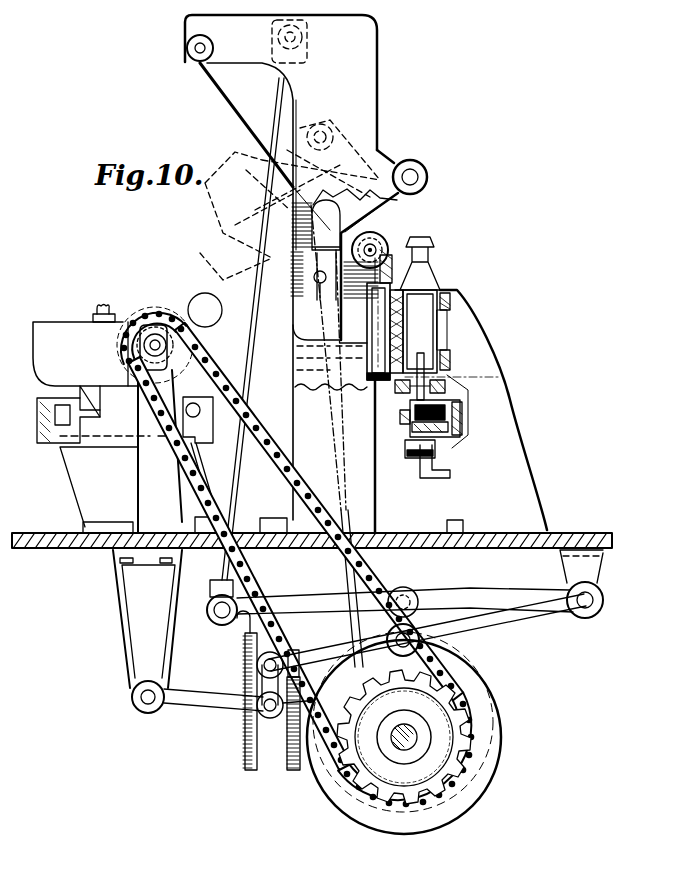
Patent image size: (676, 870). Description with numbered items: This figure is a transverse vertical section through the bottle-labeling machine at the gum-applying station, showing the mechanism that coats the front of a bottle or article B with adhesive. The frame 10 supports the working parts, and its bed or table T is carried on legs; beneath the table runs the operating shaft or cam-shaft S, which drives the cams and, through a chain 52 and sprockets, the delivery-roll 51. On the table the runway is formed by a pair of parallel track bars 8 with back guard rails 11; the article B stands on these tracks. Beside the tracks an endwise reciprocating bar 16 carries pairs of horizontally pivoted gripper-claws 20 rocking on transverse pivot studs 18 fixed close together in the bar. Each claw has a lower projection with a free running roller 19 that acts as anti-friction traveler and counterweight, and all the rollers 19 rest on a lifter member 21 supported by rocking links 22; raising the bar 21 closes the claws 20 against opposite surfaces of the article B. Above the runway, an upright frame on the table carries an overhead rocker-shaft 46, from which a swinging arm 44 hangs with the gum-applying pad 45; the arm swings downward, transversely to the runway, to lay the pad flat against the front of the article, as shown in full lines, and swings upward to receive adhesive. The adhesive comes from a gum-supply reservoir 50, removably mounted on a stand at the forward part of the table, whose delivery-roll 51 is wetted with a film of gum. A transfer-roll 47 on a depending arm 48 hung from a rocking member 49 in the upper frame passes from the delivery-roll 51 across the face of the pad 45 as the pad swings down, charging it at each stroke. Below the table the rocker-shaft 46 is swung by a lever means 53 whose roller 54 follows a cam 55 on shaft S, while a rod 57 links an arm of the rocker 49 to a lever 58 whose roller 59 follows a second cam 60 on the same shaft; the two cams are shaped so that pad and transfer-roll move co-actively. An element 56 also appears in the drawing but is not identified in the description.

The table T is at (312, 554).
The frame 10 is at (358, 619).
The rocking member 49 is at (187, 49).
The depending arm 48 is at (250, 103).
The rocker-shaft 46 is at (411, 177).
The transfer-roll 47 is at (387, 240).
The swinging arm 44 is at (309, 325).
The roller 54 is at (347, 583).
The rod 57 is at (240, 472).
The bottle or article B is at (421, 305).
The gum-applying pad 45 is at (397, 330).
The back guard rails 11 is at (445, 312).
The gripper-claws 20 is at (424, 367).
The track bars 8 is at (440, 381).
The pivot studs 18 is at (463, 403).
The reciprocating bar 16 is at (465, 420).
The roller 19 is at (465, 415).
The lifter member 21 is at (407, 439).
The rocking links 22 is at (432, 450).
The gum-supply reservoir 50 is at (85, 369).
The delivery-roll 51 is at (153, 318).
The chain 52 is at (247, 413).
The lever means 53 is at (208, 702).
The lever 58 is at (300, 614).
The roller 59 is at (420, 584).
The racks 56 is at (243, 747).
The cam 55 is at (500, 768).
The cam 60 is at (470, 667).
The operating shaft S is at (420, 737).